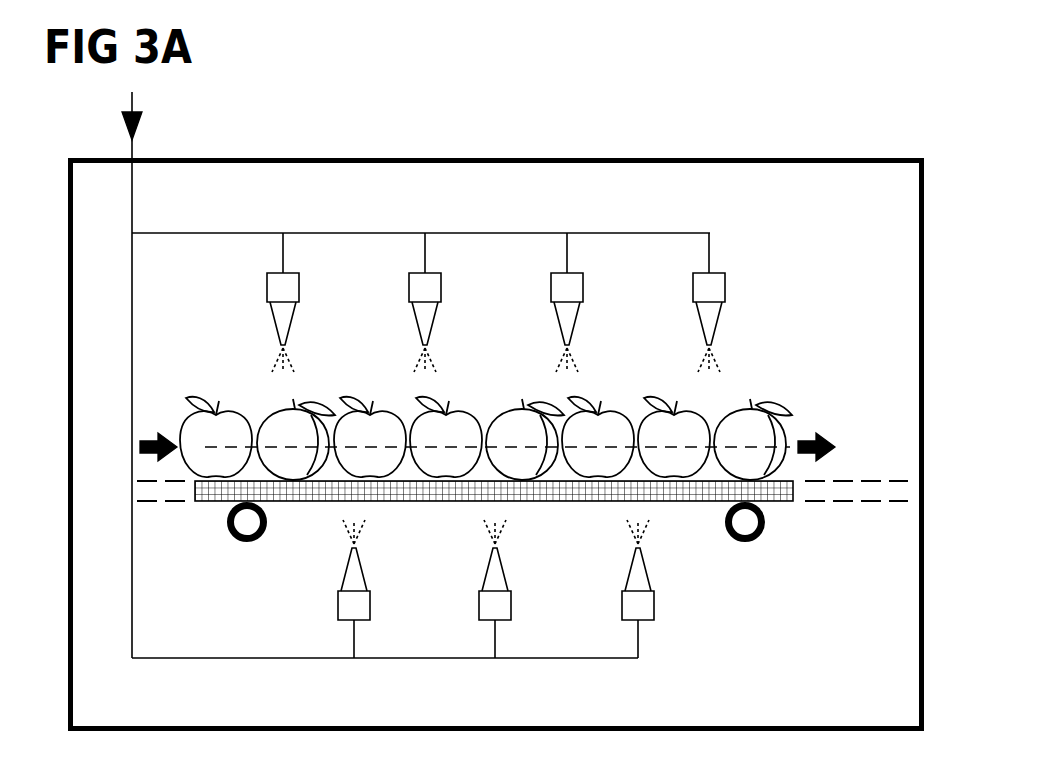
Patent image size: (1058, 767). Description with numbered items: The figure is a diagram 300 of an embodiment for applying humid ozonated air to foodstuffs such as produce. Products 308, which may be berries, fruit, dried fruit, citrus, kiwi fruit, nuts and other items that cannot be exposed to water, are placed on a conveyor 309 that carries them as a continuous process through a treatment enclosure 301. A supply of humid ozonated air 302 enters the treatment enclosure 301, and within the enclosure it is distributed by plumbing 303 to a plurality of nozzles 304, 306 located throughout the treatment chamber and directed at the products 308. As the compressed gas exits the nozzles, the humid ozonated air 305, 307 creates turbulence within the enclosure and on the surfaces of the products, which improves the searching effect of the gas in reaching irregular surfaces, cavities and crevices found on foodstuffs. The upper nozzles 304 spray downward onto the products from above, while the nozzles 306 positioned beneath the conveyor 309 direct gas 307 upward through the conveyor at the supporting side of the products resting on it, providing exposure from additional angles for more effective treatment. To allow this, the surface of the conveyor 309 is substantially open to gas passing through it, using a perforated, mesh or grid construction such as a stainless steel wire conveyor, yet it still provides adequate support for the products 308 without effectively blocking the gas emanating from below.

The diagram 300 is at (672, 20).
The treatment enclosure 301 is at (496, 445).
The supply of humid ozonated air 302 is at (154, 375).
The plumbing 303 is at (421, 241).
The nozzles 304 is at (519, 309).
The humid ozonated air 305 is at (521, 358).
The nozzles 306 is at (393, 603).
The humid ozonated air 307 is at (496, 533).
The products 308 is at (487, 438).
The conveyor 309 is at (320, 502).